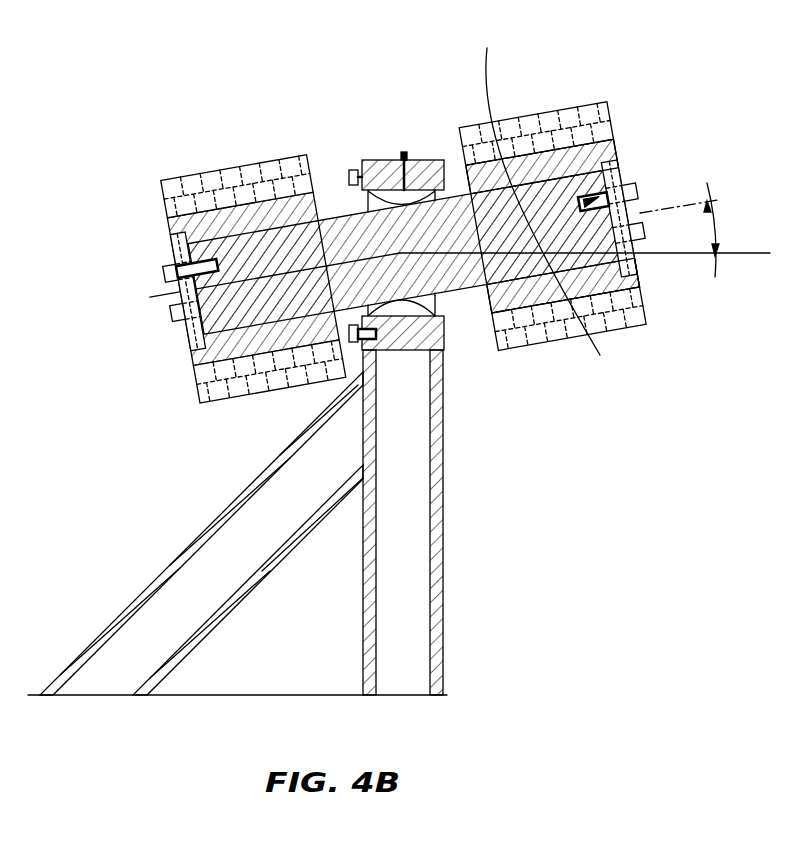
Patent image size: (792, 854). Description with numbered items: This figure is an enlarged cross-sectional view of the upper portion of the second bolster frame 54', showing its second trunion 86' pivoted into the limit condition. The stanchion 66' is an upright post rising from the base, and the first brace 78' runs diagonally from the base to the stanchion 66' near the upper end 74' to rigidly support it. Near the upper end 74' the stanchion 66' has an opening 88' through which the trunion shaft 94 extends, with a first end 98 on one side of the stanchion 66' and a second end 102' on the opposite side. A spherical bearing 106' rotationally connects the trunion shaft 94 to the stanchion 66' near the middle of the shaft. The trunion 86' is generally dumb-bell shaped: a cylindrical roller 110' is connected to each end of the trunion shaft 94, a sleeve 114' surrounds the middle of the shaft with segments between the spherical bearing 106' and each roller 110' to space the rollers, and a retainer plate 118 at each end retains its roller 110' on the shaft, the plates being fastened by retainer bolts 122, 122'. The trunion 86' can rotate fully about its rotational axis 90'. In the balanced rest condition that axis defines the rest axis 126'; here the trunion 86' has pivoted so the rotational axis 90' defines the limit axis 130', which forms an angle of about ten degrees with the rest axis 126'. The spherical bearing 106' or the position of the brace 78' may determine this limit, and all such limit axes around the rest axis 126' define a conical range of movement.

The first end 98 is at (185, 250).
The retainer plate 118 is at (190, 330).
The roller 110' is at (403, 136).
The sleeve 114' is at (419, 366).
The second trunion 86' is at (542, 121).
The rotational axis 90' is at (577, 330).
The trunion shaft 94 is at (541, 187).
The retainer bolt 122' is at (146, 291).
The retainer bolt 122 is at (662, 175).
The upper end 74' is at (383, 131).
The spherical bearing 106' is at (402, 125).
The opening 88' is at (349, 207).
The second bolster frame 54' is at (289, 505).
The stanchion 66' is at (475, 584).
The first brace 78' is at (201, 533).
The rest axis 126' is at (586, 283).
The limit axis 130' is at (706, 211).
The second end 102' is at (692, 312).